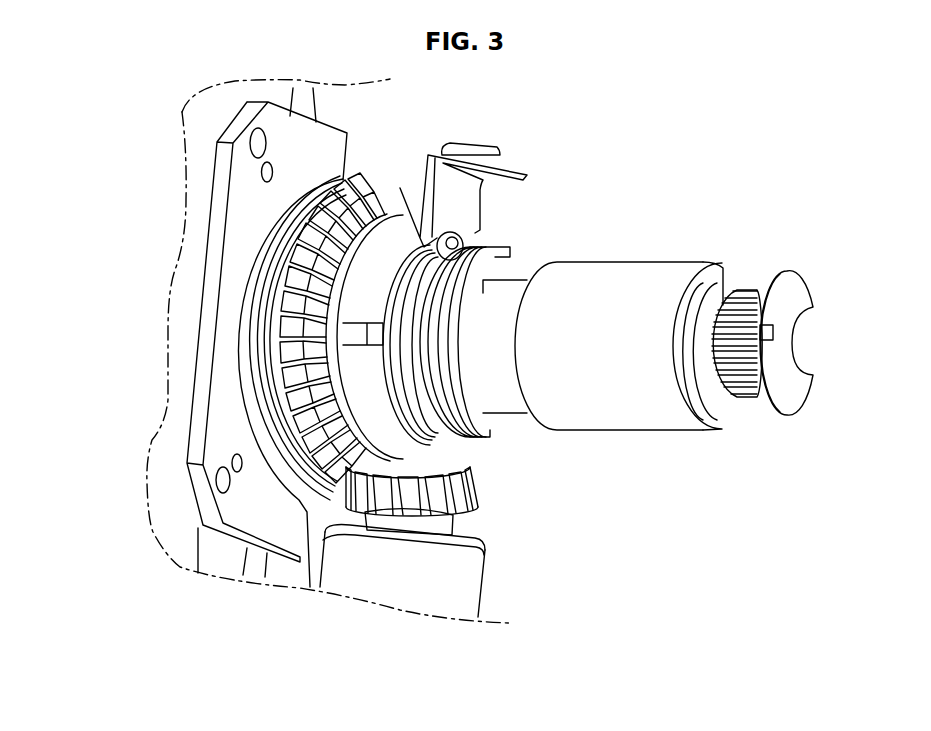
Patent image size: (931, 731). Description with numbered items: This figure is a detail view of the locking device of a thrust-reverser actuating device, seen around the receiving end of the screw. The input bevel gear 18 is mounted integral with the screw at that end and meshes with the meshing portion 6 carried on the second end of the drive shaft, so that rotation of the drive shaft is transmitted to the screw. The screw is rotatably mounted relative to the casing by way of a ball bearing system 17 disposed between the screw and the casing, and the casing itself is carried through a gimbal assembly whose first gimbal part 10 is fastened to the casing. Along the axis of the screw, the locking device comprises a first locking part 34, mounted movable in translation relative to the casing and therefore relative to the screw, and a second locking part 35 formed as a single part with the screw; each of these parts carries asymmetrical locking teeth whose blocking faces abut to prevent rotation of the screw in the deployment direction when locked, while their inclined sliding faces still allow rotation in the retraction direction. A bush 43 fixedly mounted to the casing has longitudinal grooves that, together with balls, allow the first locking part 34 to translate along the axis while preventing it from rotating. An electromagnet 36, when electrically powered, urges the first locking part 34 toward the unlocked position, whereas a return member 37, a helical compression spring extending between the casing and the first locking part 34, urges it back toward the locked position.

The meshing portion 6 is at (476, 486).
The first gimbal part 10 is at (283, 530).
The ball bearing system 17 is at (262, 433).
The input bevel gear 18 is at (364, 179).
The first locking part 34 is at (375, 305).
The second locking part 35 is at (345, 343).
The electromagnet 36 is at (623, 412).
The return member 37 is at (505, 250).
The bush 43 is at (729, 292).